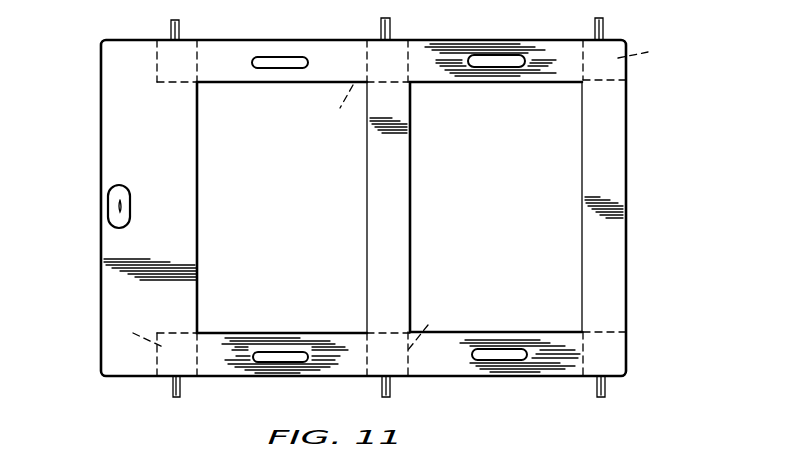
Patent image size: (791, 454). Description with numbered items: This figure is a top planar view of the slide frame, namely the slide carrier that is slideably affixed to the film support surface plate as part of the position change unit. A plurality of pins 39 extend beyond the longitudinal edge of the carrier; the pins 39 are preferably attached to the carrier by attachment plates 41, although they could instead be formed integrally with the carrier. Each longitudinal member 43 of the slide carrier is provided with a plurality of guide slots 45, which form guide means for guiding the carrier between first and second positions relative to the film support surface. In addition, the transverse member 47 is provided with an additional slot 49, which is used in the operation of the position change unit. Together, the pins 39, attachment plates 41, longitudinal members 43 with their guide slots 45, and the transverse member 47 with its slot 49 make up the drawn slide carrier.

The pins 39 is at (179, 32).
The attachment plates 41 is at (397, 207).
The longitudinal member 43 is at (227, 78).
The guide slots 45 is at (278, 66).
The transverse member 47 is at (366, 206).
The additional slot 49 is at (121, 200).